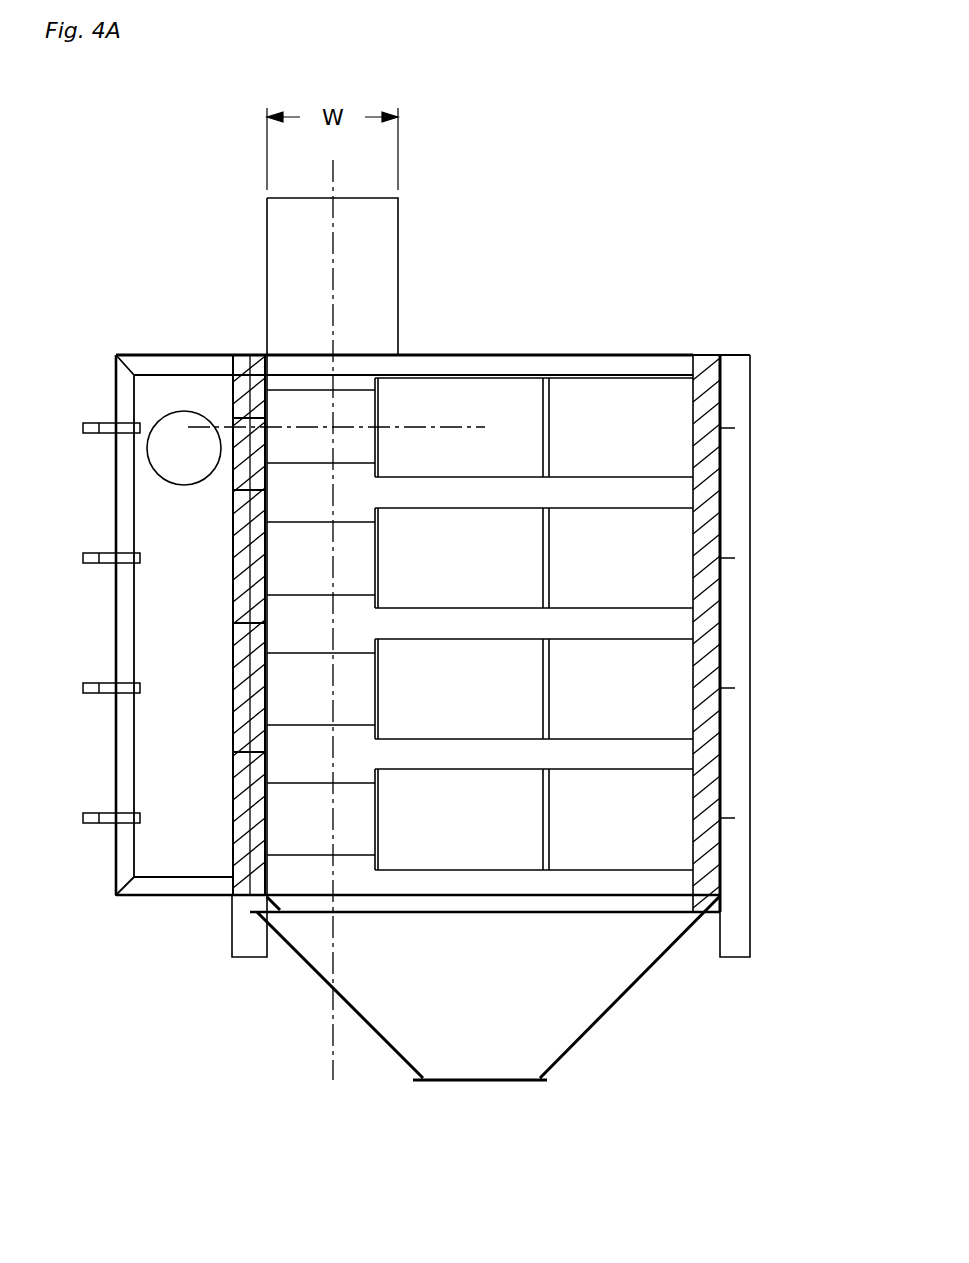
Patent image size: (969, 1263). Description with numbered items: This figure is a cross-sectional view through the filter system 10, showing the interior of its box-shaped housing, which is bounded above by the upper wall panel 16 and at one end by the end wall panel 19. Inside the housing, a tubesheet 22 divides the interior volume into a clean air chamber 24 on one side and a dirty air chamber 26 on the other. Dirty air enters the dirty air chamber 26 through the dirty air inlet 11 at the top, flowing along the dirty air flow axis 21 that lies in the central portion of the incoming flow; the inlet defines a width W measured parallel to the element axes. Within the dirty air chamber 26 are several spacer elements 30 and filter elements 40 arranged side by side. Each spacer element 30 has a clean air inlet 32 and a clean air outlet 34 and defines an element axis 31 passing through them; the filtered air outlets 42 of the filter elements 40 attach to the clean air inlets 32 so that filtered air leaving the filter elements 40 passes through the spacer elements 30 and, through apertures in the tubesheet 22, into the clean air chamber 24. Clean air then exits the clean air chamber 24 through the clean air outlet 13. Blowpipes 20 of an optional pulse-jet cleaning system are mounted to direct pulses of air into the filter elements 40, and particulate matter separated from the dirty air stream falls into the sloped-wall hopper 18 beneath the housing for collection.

The filter system 10 is at (610, 187).
The dirty air inlet 11 is at (398, 232).
The clean air outlet 13 is at (160, 420).
The upper wall panel 16 is at (608, 355).
The hopper 18 is at (600, 987).
The end wall panel 19 is at (720, 597).
The blowpipes 20 is at (90, 423).
The dirty air flow axis 21 is at (333, 182).
The tubesheet 22 is at (270, 385).
The clean air chamber 24 is at (167, 538).
The dirty air chamber 26 is at (625, 495).
The spacer elements 30 is at (285, 522).
The element axis 31 is at (457, 427).
The clean air inlet 32 is at (377, 415).
The clean air outlet 34 is at (240, 412).
The filter elements 40 is at (655, 422).
The filtered air outlets 42 is at (375, 398).